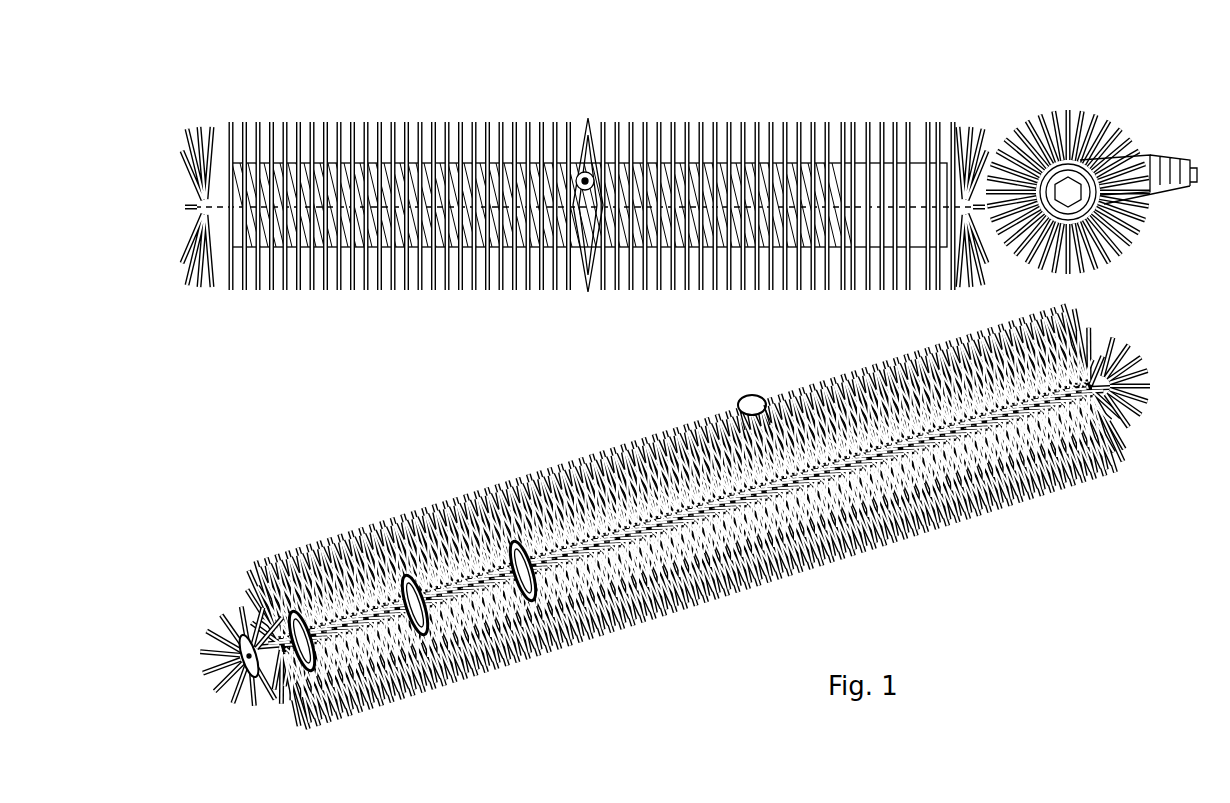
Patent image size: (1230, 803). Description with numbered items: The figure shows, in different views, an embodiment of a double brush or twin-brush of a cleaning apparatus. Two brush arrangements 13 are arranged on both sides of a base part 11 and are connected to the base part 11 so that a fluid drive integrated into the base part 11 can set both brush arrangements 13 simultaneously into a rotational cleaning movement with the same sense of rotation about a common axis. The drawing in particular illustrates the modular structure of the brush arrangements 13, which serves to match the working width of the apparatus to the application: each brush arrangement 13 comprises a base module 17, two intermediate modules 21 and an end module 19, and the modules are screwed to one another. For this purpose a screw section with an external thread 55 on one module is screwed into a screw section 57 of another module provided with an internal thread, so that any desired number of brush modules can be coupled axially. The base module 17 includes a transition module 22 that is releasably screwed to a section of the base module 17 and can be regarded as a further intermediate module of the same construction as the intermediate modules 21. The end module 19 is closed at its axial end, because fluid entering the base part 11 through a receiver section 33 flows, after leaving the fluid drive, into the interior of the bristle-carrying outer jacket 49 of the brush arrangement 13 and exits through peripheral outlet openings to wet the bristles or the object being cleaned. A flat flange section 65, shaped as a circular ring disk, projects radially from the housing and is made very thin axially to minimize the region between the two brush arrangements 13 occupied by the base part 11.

The base part 11 is at (688, 386).
The brush arrangement 13 is at (421, 81).
The base module 17 is at (592, 432).
The end module 19 is at (229, 565).
The intermediate module 21 is at (304, 542).
The transition module 22 is at (609, 648).
The receiver section 33 is at (592, 176).
The outer jacket 49 is at (347, 120).
The external thread 55 is at (302, 675).
The screw section 57 is at (282, 604).
The flange section 65 is at (575, 272).